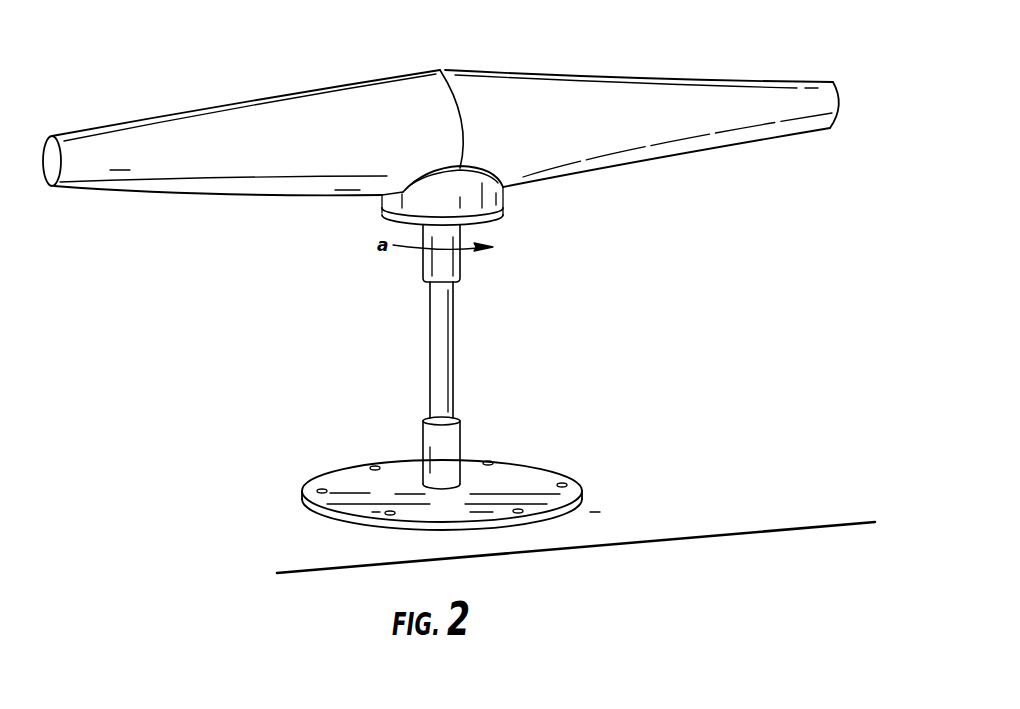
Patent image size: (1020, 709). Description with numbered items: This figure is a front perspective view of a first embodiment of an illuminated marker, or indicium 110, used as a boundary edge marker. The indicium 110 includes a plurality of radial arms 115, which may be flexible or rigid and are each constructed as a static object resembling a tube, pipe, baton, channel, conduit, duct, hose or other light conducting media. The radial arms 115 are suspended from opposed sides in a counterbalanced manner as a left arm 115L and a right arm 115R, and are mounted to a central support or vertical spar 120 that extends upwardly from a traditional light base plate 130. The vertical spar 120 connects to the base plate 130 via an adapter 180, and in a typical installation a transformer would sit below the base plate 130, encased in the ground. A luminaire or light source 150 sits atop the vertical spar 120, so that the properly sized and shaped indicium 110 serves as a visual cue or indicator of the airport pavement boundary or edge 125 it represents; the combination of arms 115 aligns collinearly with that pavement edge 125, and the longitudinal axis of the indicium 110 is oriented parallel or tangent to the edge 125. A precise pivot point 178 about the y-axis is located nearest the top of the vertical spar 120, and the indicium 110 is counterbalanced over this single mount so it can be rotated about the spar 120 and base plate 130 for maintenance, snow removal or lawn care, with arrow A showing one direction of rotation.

The indicium 110 is at (454, 254).
The radial arms 115 is at (58, 272).
The left arm 115L is at (223, 108).
The right arm 115R is at (663, 78).
The luminaire/light source 150 is at (470, 108).
The pivot point 178 is at (378, 213).
The vertical spar 120 is at (457, 387).
The adapter 180 is at (422, 452).
The base plate 130 is at (350, 465).
The pavement boundary/edge 125 is at (657, 538).